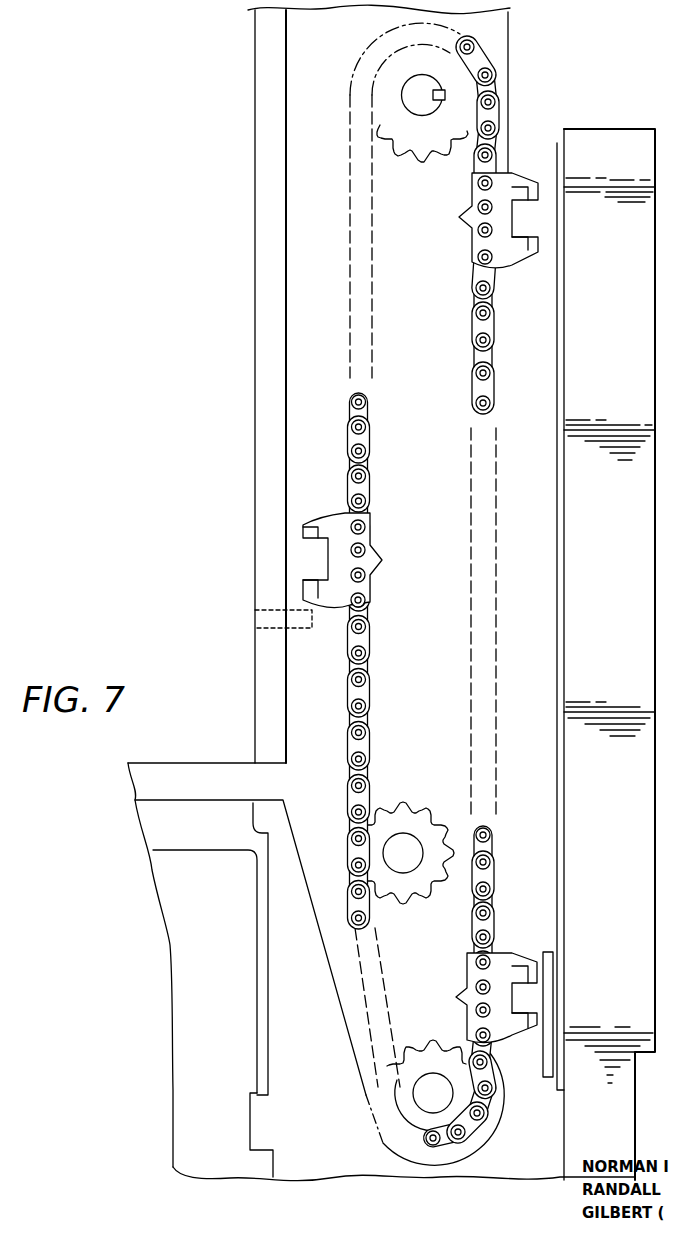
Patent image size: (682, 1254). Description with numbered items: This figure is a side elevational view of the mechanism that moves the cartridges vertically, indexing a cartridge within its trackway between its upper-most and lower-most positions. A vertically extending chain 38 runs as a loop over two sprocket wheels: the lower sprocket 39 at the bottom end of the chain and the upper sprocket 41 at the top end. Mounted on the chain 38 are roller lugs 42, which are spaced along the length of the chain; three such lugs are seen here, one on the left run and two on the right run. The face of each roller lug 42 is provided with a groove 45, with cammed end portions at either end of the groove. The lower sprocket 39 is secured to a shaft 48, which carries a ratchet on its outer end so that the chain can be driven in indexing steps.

The chain 38 is at (347, 412).
The lower sprocket wheel 39 is at (407, 1108).
The upper sprocket wheel 41 is at (443, 78).
The roller lug 42 is at (508, 186).
The groove 45 is at (533, 222).
The shaft 48 is at (437, 1100).